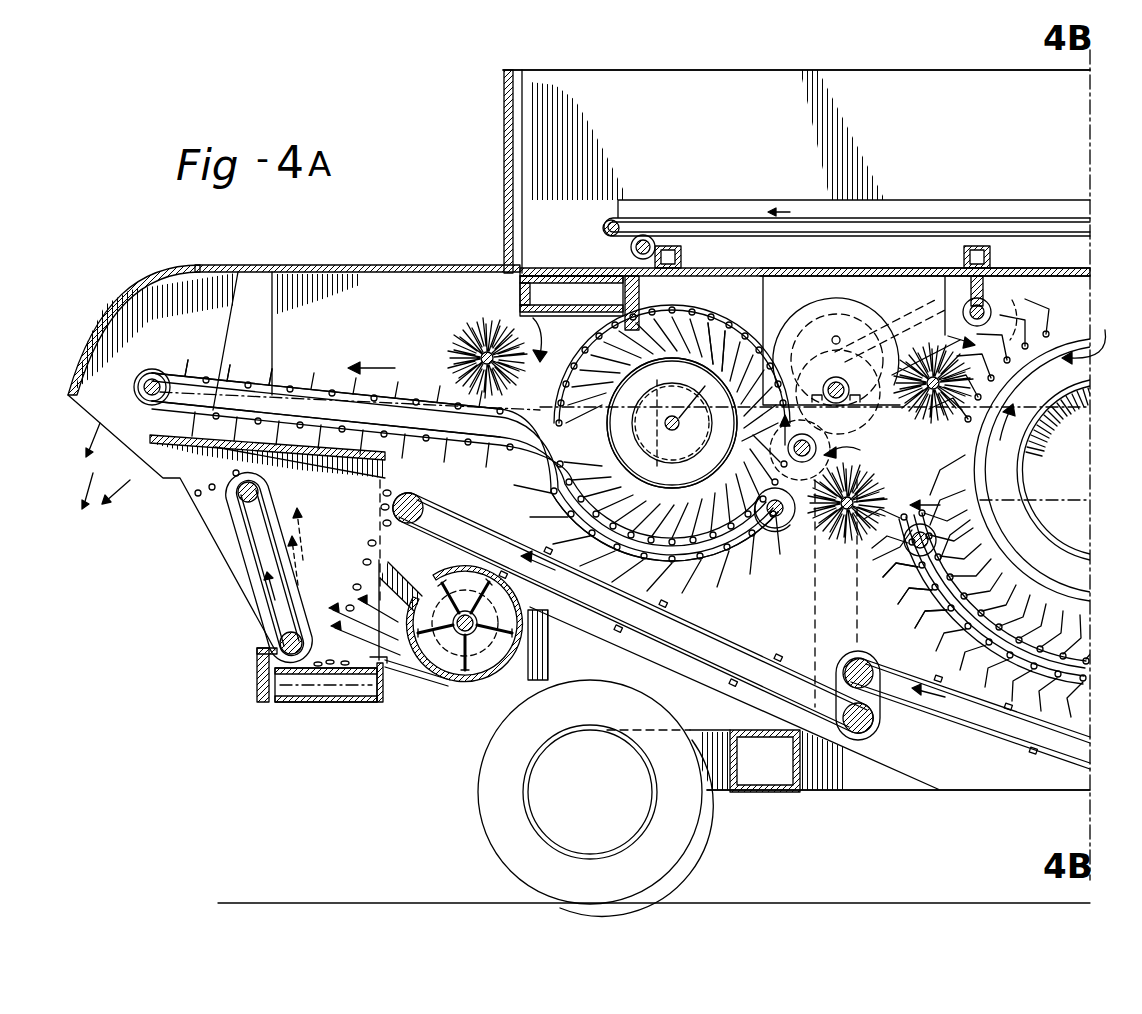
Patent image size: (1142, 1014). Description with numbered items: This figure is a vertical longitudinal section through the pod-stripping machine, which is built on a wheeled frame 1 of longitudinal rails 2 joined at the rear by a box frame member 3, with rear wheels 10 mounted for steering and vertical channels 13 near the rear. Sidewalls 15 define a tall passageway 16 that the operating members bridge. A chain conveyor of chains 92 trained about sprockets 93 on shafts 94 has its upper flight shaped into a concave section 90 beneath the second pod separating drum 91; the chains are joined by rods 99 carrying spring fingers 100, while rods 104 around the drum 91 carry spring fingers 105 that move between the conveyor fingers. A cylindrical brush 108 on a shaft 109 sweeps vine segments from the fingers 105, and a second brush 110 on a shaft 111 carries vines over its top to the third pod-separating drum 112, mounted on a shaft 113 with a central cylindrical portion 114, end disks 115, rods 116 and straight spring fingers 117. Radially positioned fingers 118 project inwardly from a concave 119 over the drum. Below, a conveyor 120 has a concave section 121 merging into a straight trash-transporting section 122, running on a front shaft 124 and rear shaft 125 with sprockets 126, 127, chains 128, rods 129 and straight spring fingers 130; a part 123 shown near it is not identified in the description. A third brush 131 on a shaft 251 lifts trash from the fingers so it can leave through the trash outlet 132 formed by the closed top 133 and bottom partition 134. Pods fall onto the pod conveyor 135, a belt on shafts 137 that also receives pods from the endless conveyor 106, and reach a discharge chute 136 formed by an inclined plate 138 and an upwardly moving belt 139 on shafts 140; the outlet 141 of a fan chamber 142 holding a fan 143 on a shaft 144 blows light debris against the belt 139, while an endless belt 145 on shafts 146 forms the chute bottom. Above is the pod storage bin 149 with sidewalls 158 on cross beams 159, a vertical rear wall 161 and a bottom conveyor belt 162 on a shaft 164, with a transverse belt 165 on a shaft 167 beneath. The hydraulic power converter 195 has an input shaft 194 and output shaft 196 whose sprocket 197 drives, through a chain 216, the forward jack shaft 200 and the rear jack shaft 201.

The wheeled frame 1 is at (966, 797).
The longitudinally extending rails 2 is at (835, 798).
The cross beam 3 is at (770, 795).
The rear wheels 10 is at (490, 830).
The vertical channels 13 is at (815, 626).
The sidewalls 15 is at (420, 285).
The passageway 16 is at (795, 280).
The concave section 90 is at (1068, 656).
The second pod separating drum 91 is at (1089, 335).
The chains 92 is at (1008, 672).
The sprockets 93 is at (925, 590).
The shafts 94 is at (910, 550).
The rods 99 is at (928, 618).
The spring fingers 100 is at (945, 640).
The rods 104 is at (1038, 478).
The spring fingers 105 is at (962, 452).
The endless conveyor 106 is at (1010, 744).
The cylindrical brush 108 is at (932, 350).
The shaft 109 is at (915, 420).
The second brush 110 is at (845, 545).
The shaft 111 is at (860, 485).
The third pod-separating drum 112 is at (716, 345).
The shaft 113 is at (670, 432).
The central cylindrical portion 114 is at (691, 418).
The end disks 115 is at (610, 427).
The rods 116 is at (672, 416).
The spring fingers 117 is at (562, 392).
The radially positioned fingers 118 is at (655, 338).
The concave 119 is at (684, 290).
The conveyor 120 is at (718, 567).
The concave section 121 is at (548, 498).
The trash-transporting section 122 is at (298, 385).
The fingers 123 is at (335, 392).
The shaft 124 is at (790, 540).
The shaft 125 is at (152, 380).
The sprocket 126 is at (782, 530).
The sprocket 127 is at (166, 389).
The chains 128 is at (240, 395).
The rods 129 is at (540, 462).
The spring fingers 130 is at (430, 388).
The third cylindrical brush 131 is at (480, 340).
The trash outlet 132 is at (75, 407).
The closed top 133 is at (350, 266).
The bottom partition 134 is at (295, 458).
The pod conveyor 135 is at (727, 632).
The discharge chute 136 is at (392, 570).
The shafts 137 is at (458, 484).
The inclined plate 138 is at (382, 527).
The inclined belt 139 is at (285, 563).
The shafts 140 is at (240, 495).
The fan chamber outlet 141 is at (392, 627).
The fan chamber 142 is at (524, 648).
The fan 143 is at (452, 640).
The shaft 144 is at (496, 642).
The endless belt 145 is at (260, 678).
The shafts 146 is at (343, 688).
The pod storage bin 149 is at (718, 70).
The sidewalls 158 is at (615, 70).
The cross beams 159 is at (655, 250).
The vertical rear wall 161 is at (505, 157).
The conveyor belt 162 is at (965, 218).
The shaft 164 is at (603, 224).
The transverse belt 165 is at (568, 282).
The shaft 167 is at (518, 298).
The input shaft 194 is at (862, 298).
The hydraulic power converter 195 is at (836, 336).
The output shaft 196 is at (900, 380).
The sprocket 197 is at (790, 340).
The forward jack shaft 200 is at (985, 312).
The jack shaft 201 is at (825, 447).
The chain 216 is at (922, 297).
The shaft 251 is at (470, 338).